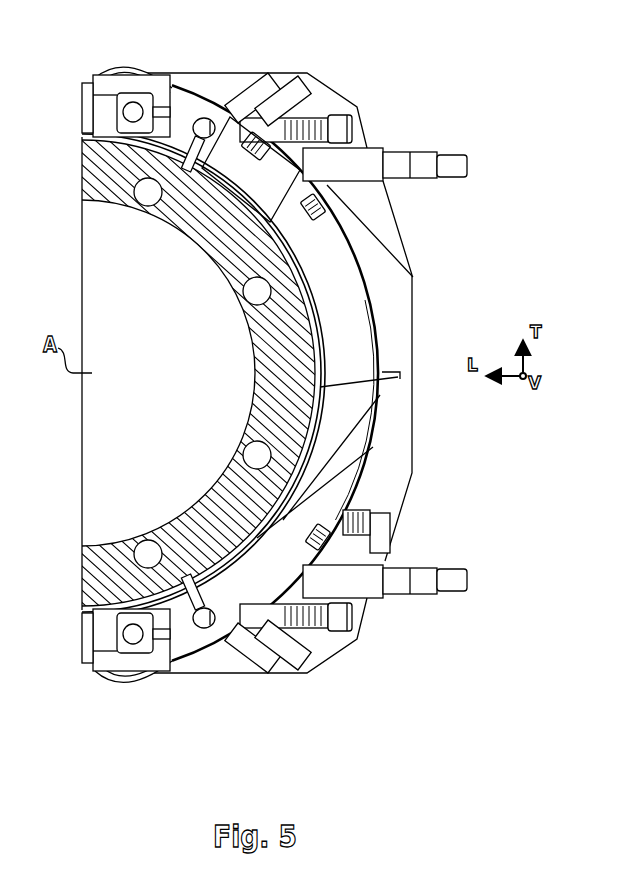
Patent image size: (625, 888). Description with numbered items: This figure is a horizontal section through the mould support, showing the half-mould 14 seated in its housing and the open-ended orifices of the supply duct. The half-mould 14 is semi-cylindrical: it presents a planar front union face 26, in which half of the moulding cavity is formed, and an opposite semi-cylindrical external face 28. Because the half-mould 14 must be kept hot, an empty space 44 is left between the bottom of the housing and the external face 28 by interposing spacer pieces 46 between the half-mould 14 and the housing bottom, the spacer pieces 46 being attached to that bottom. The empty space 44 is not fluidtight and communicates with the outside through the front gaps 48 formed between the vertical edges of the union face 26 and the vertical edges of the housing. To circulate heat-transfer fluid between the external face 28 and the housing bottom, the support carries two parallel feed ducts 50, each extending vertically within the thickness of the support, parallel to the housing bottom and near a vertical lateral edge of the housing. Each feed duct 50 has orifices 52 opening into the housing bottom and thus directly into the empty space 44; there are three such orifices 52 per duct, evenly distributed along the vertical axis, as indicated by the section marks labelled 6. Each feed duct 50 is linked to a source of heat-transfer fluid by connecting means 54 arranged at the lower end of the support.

The half-mould 14 is at (290, 380).
The front union face 26 is at (82, 174).
The external face 28 is at (305, 320).
The empty space 44 is at (318, 330).
The spacer pieces 46 is at (290, 262).
The front gaps 48 is at (87, 137).
The feed duct 50 is at (200, 118).
The orifice 52 is at (172, 140).
The connecting means 54 is at (337, 128).
The section line 6- 6 is at (180, 577).